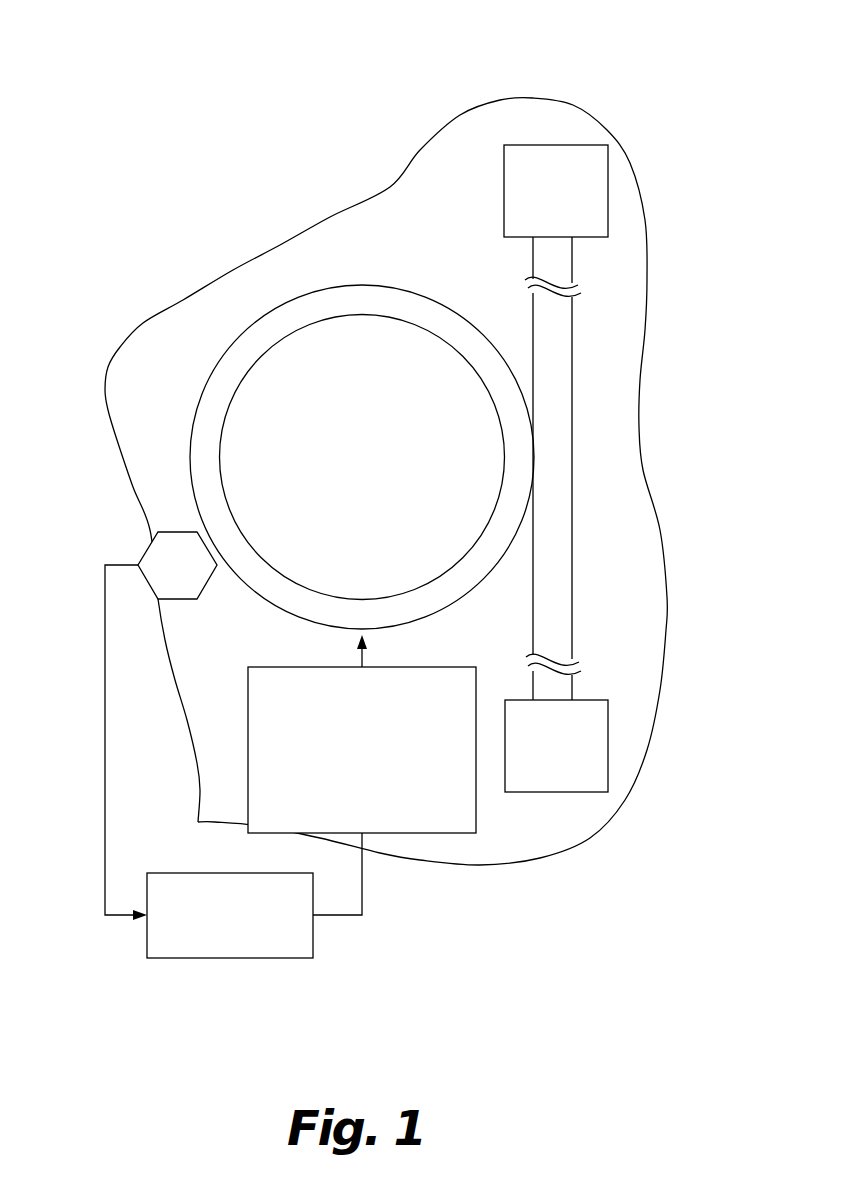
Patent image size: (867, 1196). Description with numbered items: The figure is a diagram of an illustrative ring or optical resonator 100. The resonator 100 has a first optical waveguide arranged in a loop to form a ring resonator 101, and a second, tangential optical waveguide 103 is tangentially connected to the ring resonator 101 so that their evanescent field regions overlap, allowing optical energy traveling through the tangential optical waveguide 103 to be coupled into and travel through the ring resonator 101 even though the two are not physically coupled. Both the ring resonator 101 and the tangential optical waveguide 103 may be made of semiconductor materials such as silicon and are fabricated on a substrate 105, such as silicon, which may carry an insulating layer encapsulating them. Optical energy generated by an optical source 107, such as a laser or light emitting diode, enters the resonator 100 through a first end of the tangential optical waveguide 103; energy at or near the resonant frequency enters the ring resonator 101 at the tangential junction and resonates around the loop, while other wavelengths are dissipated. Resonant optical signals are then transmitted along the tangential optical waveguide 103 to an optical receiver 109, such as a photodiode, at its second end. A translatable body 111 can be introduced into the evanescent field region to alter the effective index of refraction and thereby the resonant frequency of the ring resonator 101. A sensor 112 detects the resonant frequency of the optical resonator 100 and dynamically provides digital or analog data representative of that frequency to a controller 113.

The optical resonator 100 is at (138, 63).
The ring resonator 101 is at (218, 398).
The tangential optical waveguide 103 is at (555, 328).
The substrate 105 is at (363, 205).
The optical source 107 is at (556, 746).
The optical receiver 109 is at (556, 191).
The translatable body 111 is at (283, 707).
The sensor 112 is at (192, 537).
The controller 113 is at (233, 761).